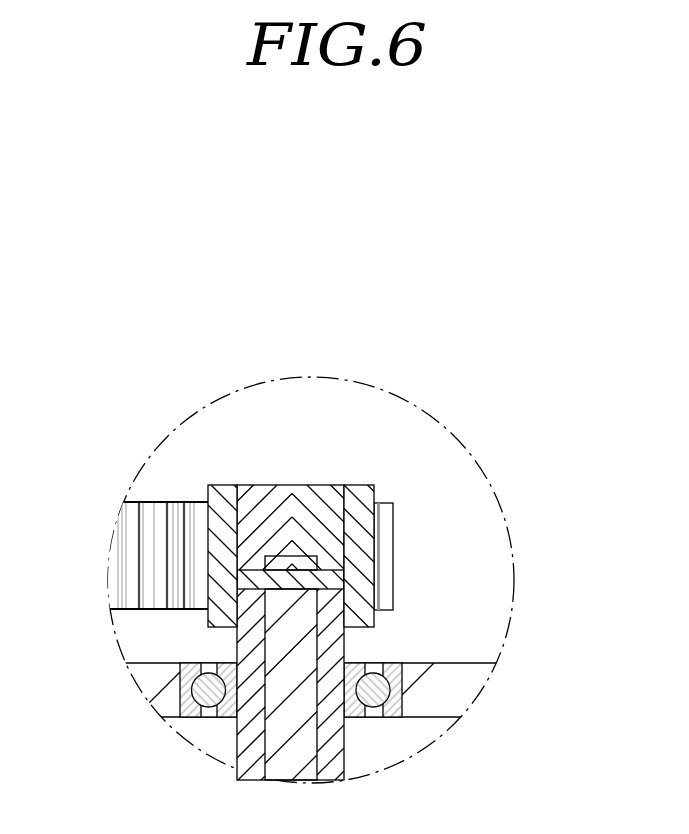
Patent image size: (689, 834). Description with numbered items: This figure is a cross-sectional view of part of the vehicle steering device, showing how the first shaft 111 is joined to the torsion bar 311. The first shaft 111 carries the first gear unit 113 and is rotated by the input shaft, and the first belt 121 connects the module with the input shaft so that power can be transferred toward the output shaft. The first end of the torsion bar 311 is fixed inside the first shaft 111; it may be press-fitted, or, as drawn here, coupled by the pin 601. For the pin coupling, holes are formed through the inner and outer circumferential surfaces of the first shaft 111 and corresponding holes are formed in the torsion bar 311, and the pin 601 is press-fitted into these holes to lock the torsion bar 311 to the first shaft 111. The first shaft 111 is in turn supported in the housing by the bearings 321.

The first shaft 111 is at (282, 492).
The first gear unit 113 is at (223, 492).
The first belt 121 is at (130, 545).
The pin 601 is at (328, 578).
The torsion bar 311 is at (300, 732).
The bearings 321 is at (375, 692).